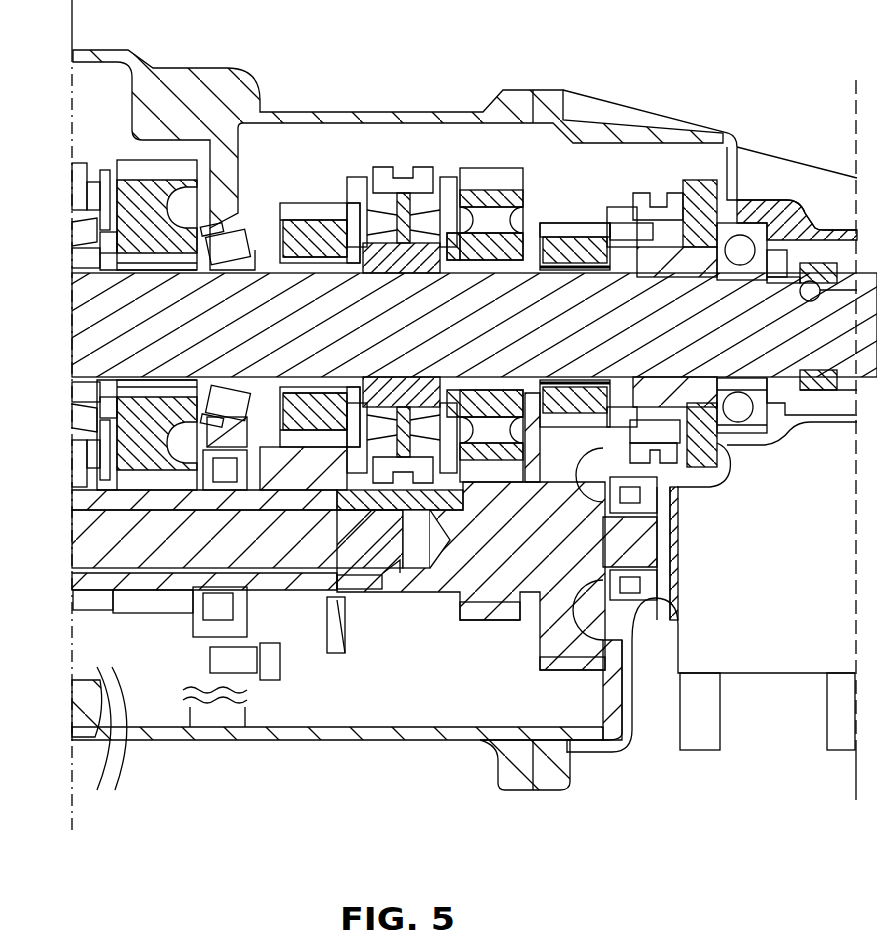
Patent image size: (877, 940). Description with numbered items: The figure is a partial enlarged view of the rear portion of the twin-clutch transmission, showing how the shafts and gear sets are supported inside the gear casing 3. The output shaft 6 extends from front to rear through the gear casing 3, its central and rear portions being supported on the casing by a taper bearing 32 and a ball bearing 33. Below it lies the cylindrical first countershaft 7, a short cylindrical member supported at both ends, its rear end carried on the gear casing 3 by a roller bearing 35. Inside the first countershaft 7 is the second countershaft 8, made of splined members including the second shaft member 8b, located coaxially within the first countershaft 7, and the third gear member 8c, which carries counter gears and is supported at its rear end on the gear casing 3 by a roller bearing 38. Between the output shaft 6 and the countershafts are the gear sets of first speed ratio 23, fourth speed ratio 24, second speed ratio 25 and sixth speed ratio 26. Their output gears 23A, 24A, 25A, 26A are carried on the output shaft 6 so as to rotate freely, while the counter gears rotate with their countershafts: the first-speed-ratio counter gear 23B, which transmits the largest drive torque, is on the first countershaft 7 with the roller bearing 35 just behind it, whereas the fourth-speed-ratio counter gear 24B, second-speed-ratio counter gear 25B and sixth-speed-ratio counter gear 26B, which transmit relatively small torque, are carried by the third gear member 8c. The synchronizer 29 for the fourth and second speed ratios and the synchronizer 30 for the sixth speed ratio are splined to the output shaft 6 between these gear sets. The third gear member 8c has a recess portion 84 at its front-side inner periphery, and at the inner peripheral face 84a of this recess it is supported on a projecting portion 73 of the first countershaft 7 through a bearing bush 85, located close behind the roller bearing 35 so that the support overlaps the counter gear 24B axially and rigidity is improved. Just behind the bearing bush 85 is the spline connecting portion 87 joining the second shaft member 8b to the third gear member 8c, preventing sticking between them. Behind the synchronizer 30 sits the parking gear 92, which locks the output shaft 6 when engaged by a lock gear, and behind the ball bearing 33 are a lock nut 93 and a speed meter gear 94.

The gear casing 3 is at (424, 740).
The output shaft 6 is at (85, 292).
The first countershaft 7 is at (100, 588).
The second countershaft 8 is at (78, 562).
The second shaft member 8b is at (85, 530).
The third gear member 8c is at (672, 528).
The gear set of first speed ratio 23 is at (150, 160).
The first-speed-ratio output gear 23A is at (135, 165).
The first-speed-ratio counter gear 23B is at (148, 608).
The gear set of fourth speed ratio 24 is at (330, 198).
The fourth-speed-ratio output gear 24A is at (318, 203).
The fourth-speed-ratio counter gear 24B is at (343, 645).
The gear set of second speed ratio 25 is at (510, 168).
The second-speed-ratio output gear 25A is at (477, 175).
The second-speed-ratio counter gear 25B is at (492, 617).
The gear set of sixth speed ratio 26 is at (595, 221).
The sixth-speed-ratio output gear 26A is at (568, 228).
The sixth-speed-ratio counter gear 26B is at (562, 663).
The 4-2 synchronizer 29 is at (408, 190).
The 6 synchronizer 30 is at (652, 197).
The taper bearing 32 is at (250, 228).
The ball bearing 33 is at (745, 457).
The roller bearing 35 is at (190, 628).
The roller bearing 38 is at (662, 600).
The projecting portion 73 is at (340, 490).
The recess portion 84 is at (407, 560).
The inner peripheral face 84a is at (342, 605).
The bearing bush 85 is at (340, 596).
The spline connecting portion 87 is at (383, 573).
The parking gear 92 is at (702, 180).
The lock nut 93 is at (775, 240).
The speed meter gear 94 is at (825, 275).